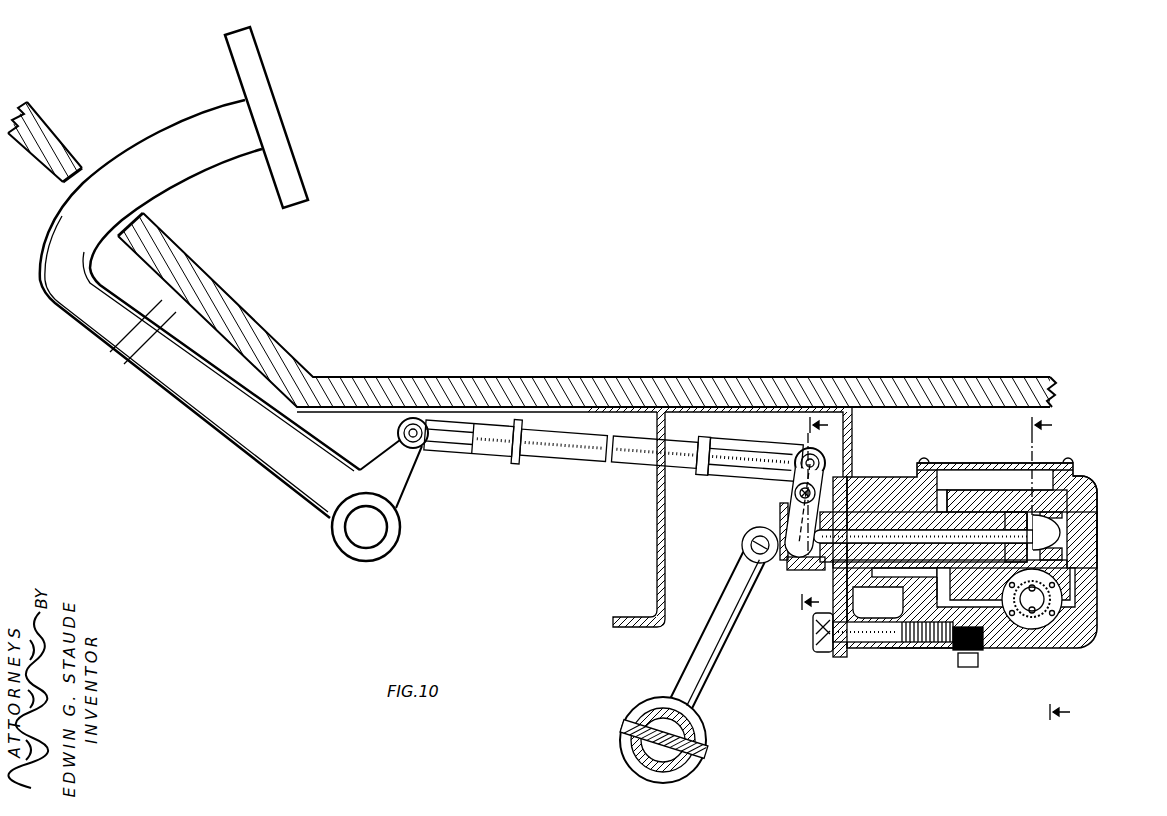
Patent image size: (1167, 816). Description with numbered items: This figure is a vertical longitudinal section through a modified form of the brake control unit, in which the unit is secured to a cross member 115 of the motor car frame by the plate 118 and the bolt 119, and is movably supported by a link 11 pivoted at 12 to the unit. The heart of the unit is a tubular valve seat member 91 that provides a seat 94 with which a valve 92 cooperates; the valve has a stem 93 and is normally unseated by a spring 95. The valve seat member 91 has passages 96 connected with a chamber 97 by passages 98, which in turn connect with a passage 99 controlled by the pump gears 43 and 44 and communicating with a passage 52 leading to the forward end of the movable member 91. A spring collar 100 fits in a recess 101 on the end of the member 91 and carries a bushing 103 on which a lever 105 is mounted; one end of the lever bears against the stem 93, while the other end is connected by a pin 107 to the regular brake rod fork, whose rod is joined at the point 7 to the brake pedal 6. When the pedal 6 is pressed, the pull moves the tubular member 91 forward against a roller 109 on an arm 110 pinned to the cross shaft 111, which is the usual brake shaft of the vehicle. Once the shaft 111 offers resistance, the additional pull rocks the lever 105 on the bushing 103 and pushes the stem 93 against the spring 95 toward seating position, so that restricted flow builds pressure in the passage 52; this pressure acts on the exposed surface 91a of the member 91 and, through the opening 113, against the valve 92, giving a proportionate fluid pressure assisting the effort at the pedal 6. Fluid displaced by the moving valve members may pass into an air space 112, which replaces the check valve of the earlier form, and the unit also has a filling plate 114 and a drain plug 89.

The brake pedal 6 is at (228, 124).
The brake rod clevis connection 7 is at (418, 447).
The pin 107 is at (826, 456).
The cross member 115 is at (850, 409).
The air space 112 is at (965, 475).
The filling plate 114 is at (940, 478).
The chamber 97 is at (975, 478).
The passages 98 is at (992, 510).
The passages 96 is at (1018, 512).
The spring 95 is at (1052, 512).
The valve 92 is at (1078, 542).
The surface of exposed area of tubular valve seat element 91a is at (1068, 528).
The opening 113 is at (1078, 533).
The valve stem 93 is at (888, 533).
The seat 94 is at (1073, 566).
The passage 52 is at (1073, 593).
The pump gear 43 is at (1053, 612).
The pump gear 44 is at (1042, 630).
The tubular valve seat member 91 is at (939, 584).
The drain plug 89 is at (966, 668).
The passage 99 is at (917, 648).
The bolt 119 is at (867, 643).
The plate 118 is at (840, 657).
The spring collar 100 is at (797, 570).
The lever 105 is at (792, 522).
The recess 101 is at (783, 512).
The bushing 103 is at (794, 493).
The roller 109 is at (741, 544).
The arm 110 is at (733, 593).
The cross shaft 111 is at (646, 716).
The link 11 is at (1038, 581).
The pivot 12 is at (805, 530).